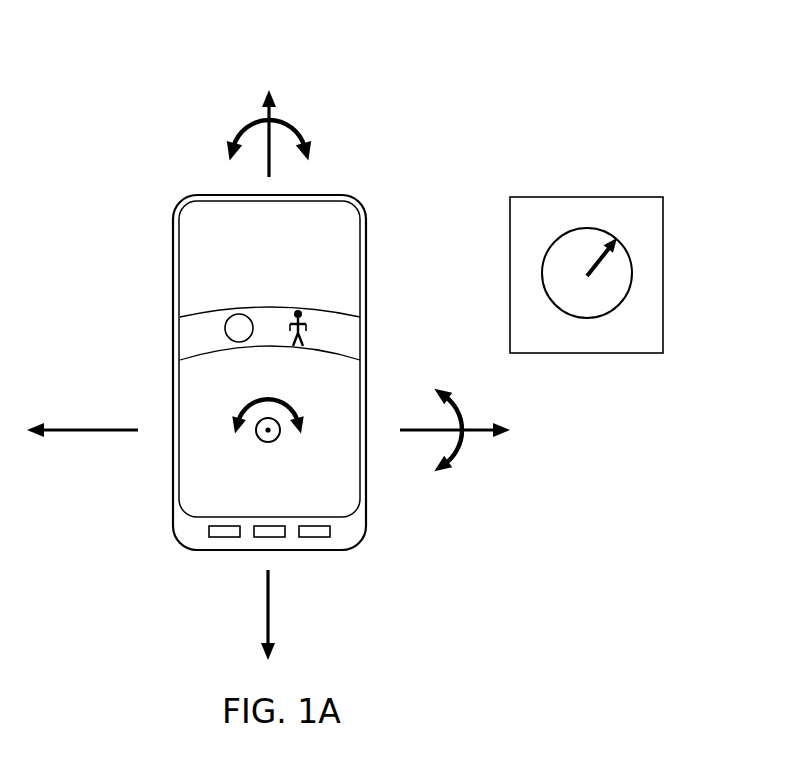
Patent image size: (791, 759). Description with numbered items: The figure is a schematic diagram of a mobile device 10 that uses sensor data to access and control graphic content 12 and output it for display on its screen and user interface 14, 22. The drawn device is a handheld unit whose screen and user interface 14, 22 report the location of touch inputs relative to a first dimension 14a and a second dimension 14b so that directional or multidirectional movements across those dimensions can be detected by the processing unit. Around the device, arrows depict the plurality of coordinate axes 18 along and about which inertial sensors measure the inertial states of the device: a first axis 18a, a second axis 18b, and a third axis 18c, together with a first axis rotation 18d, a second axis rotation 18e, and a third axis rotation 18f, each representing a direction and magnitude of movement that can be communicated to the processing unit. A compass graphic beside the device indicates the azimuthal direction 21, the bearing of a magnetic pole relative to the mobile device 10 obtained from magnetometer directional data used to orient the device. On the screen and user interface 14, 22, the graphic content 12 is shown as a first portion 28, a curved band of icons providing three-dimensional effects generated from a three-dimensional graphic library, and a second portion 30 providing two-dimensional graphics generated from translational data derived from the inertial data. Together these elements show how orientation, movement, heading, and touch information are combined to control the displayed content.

The mobile device 10 is at (433, 110).
The graphic content 12 is at (205, 297).
The housing / touch screen 14, 22 is at (345, 253).
The first dimension 14a is at (260, 517).
The second dimension 14b is at (366, 388).
The coordinate axes 18 is at (218, 112).
The first axis 18a is at (75, 430).
The second axis 18b is at (270, 610).
The third axis 18c is at (271, 435).
The first axis rotation 18d is at (455, 452).
The second axis rotation 18e is at (290, 127).
The third axis rotation 18f is at (288, 400).
The azimuthal direction 21 is at (643, 243).
The first portion 28 is at (192, 332).
The second portion 30 is at (345, 330).